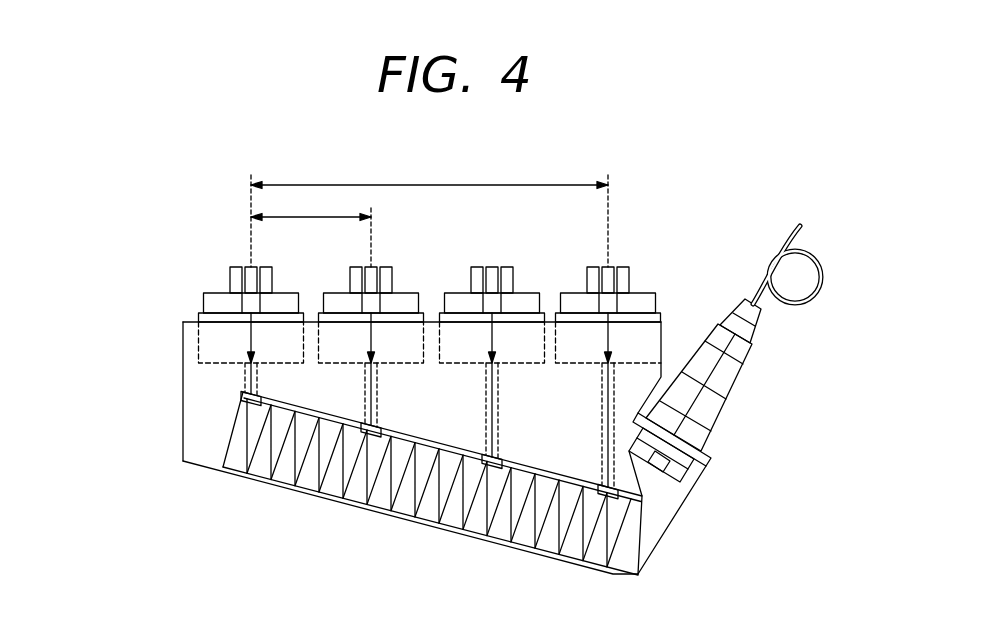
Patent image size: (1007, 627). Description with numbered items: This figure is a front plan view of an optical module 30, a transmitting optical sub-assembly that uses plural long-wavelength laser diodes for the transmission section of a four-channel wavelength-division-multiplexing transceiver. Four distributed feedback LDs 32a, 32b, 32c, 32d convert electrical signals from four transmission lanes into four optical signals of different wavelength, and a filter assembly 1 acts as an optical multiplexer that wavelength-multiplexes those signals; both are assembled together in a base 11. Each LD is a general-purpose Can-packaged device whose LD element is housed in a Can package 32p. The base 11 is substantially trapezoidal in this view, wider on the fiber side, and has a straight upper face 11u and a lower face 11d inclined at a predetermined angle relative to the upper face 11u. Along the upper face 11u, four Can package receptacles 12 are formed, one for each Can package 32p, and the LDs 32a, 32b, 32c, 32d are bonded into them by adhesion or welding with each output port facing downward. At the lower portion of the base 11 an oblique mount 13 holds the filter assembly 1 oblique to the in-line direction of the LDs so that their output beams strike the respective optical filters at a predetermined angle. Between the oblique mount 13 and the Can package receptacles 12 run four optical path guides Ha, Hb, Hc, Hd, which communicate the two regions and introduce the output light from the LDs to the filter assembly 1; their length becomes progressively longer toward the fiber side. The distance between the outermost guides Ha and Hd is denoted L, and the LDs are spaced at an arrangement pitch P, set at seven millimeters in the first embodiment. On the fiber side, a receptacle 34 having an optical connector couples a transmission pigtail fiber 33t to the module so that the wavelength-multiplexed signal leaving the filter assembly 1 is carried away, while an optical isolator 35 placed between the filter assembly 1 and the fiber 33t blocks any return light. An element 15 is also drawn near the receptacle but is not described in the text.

The filter assembly 1 is at (395, 523).
The base 11 is at (183, 390).
The lower face 11d is at (523, 553).
The upper face 11u is at (550, 320).
The Can package receptacle 12 is at (198, 340).
The oblique mount 13 is at (659, 551).
The connector holder 15 is at (700, 470).
The optical module 30 is at (698, 200).
The distributed feedback LD 32a is at (199, 284).
The distributed feedback LD 32b is at (411, 283).
The distributed feedback LD 32c is at (526, 283).
The distributed feedback LD 32d is at (656, 283).
The Can package 32p is at (285, 292).
The transmission pigtail fiber 33t is at (815, 302).
The receptacle 34 is at (735, 402).
The optical isolator 35 is at (682, 480).
The optical path guide Ha is at (245, 382).
The optical path guide Hb is at (365, 388).
The optical path guide Hc is at (485, 405).
The optical path guide Hd is at (603, 422).
The distance between optical path guides Ha and Hd L is at (429, 212).
The arrangement pitch of the LDs P is at (311, 227).